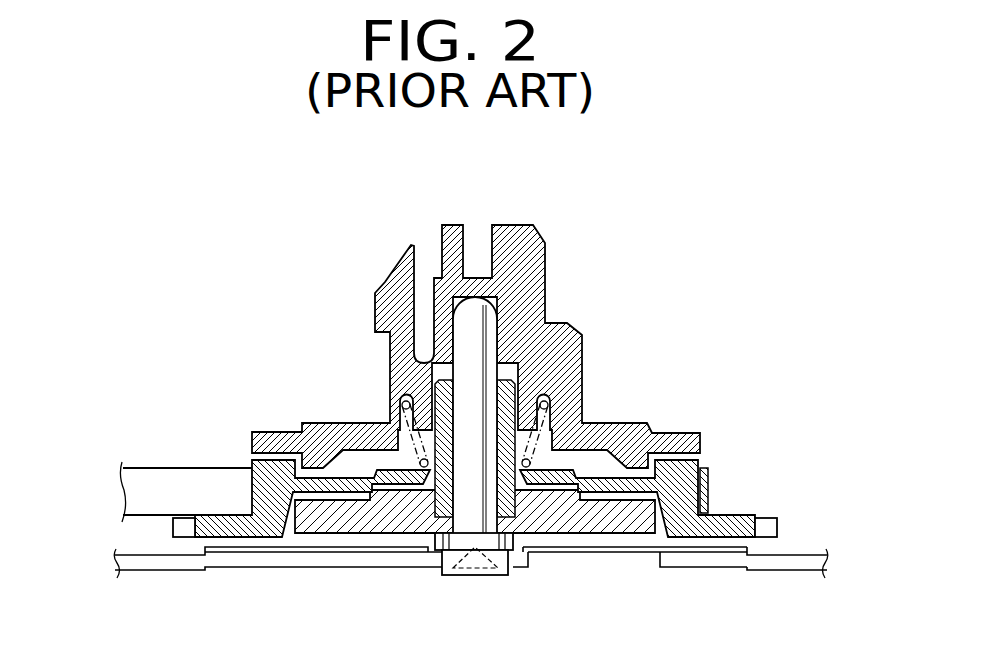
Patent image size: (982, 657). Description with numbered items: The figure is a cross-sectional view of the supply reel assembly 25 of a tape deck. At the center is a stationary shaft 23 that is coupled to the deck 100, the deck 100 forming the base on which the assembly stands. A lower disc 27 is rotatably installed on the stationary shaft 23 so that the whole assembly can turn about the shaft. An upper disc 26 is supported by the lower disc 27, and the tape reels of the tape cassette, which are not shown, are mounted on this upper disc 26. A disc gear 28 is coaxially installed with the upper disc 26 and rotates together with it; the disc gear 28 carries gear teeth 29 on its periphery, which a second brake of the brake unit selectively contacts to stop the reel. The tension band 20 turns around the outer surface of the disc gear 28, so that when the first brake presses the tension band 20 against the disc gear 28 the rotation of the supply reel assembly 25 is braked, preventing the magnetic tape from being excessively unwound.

The tension band 20 is at (184, 473).
The stationary shaft 23 is at (465, 518).
The supply reel assembly 25 is at (476, 382).
The upper disc 26 is at (583, 334).
The lower disc 27 is at (621, 524).
The disc gear 28 is at (686, 478).
The gear teeth 29 is at (744, 518).
The deck 100 is at (297, 558).